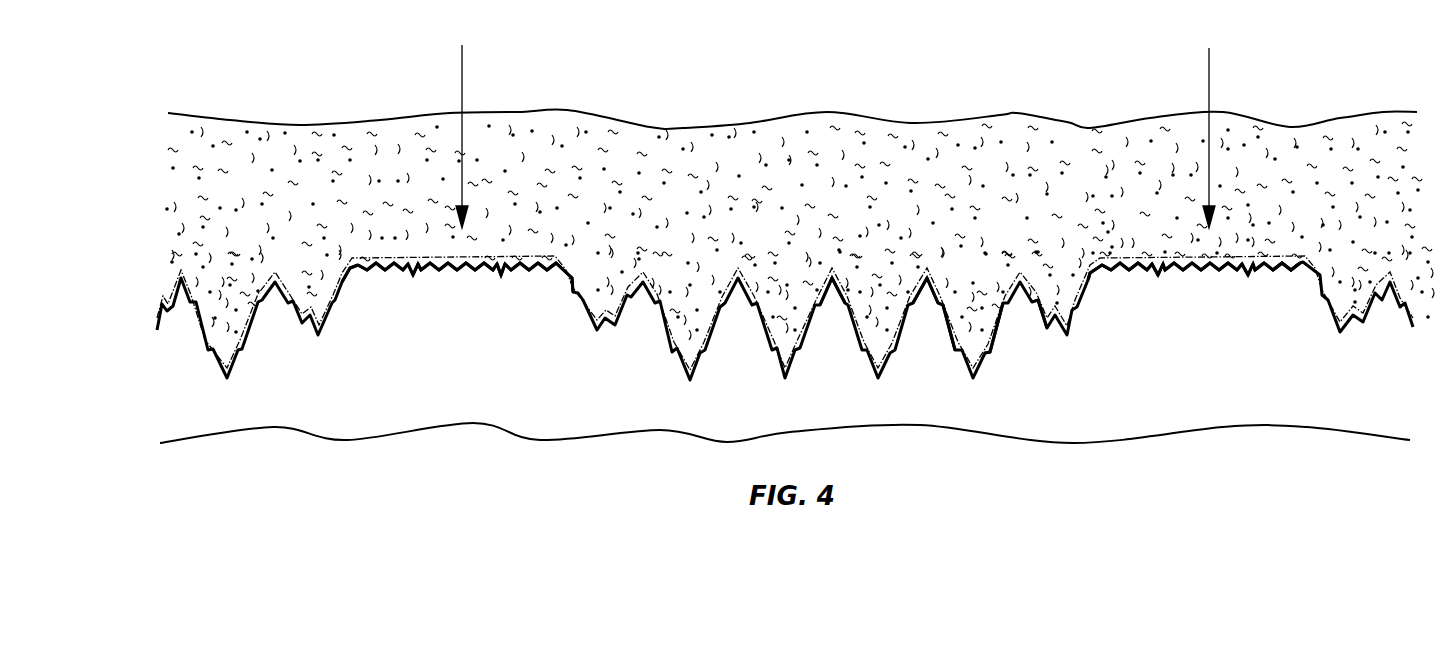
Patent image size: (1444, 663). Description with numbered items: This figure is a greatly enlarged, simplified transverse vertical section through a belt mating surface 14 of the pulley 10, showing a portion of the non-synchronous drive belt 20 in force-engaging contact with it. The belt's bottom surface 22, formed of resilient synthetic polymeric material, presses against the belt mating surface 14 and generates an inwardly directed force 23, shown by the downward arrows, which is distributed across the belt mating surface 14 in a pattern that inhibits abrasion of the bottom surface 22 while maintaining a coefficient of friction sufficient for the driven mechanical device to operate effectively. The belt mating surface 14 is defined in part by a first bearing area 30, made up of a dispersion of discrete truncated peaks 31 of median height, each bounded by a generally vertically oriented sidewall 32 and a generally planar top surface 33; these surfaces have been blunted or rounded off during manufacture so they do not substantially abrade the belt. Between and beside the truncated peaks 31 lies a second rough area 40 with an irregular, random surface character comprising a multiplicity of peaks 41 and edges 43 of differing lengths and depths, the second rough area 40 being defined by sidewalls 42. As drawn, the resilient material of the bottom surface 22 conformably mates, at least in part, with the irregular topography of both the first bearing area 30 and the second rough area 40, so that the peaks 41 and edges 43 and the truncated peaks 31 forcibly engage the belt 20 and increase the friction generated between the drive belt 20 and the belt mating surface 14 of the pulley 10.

The pulley 10 is at (737, 385).
The belt mating surface 14 is at (565, 295).
The non-synchronous drive belt 20 is at (972, 182).
The bottom surface 22 is at (697, 307).
The inwardly directed force 23 is at (462, 146).
The first bearing area 30 is at (448, 268).
The truncated peaks 31 is at (550, 264).
The sidewall 32 is at (349, 274).
The top surface 33 is at (1295, 262).
The second rough area 40 is at (830, 308).
The peaks 41 is at (924, 290).
The sidewalls 42 is at (1043, 298).
The edges 43 is at (948, 312).